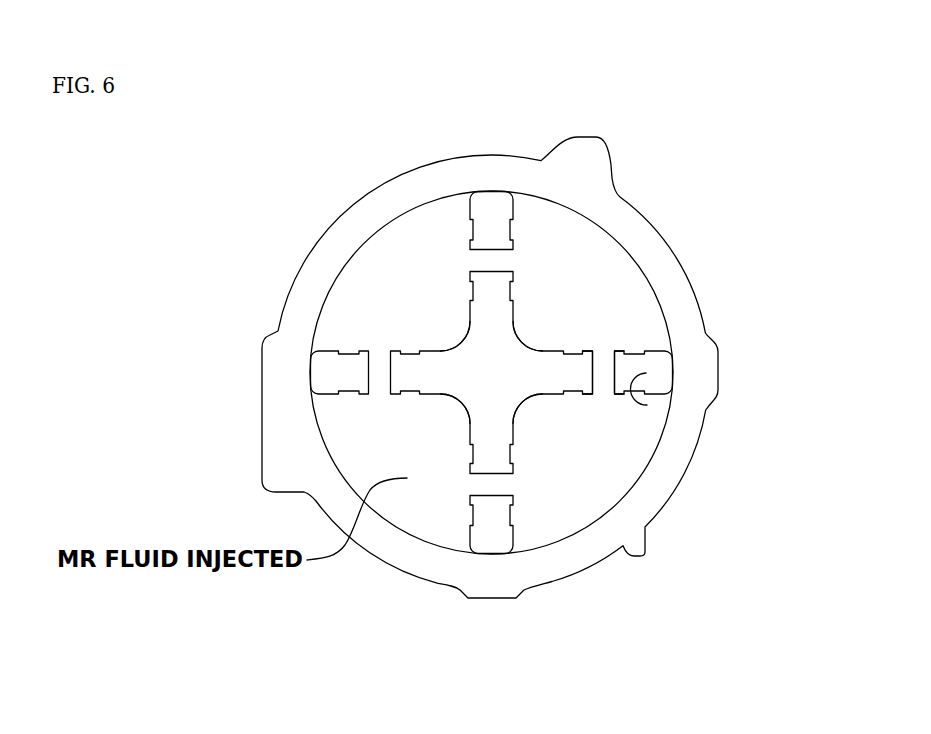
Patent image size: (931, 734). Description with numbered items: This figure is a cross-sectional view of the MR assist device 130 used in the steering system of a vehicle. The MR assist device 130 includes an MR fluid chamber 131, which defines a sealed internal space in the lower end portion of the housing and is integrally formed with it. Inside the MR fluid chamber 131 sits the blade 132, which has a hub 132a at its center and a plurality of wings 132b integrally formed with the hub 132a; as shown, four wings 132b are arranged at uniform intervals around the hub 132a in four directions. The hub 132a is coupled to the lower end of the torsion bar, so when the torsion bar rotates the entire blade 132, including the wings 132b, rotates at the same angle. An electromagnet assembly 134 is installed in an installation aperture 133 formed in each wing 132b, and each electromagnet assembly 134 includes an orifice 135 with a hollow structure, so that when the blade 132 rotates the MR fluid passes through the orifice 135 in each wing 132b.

The MR assist device 130 is at (359, 559).
The MR fluid chamber 131 is at (655, 248).
The blade 132 is at (531, 319).
The hub 132a is at (517, 395).
The wings 132b is at (658, 370).
The installation aperture 133 is at (647, 405).
The electromagnet assembly 134 is at (630, 338).
The orifice 135 is at (602, 382).